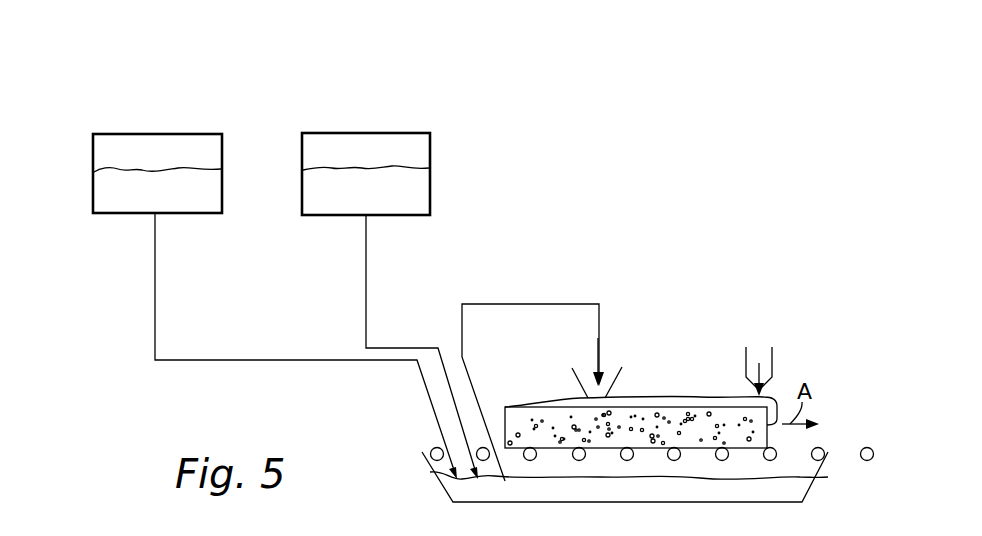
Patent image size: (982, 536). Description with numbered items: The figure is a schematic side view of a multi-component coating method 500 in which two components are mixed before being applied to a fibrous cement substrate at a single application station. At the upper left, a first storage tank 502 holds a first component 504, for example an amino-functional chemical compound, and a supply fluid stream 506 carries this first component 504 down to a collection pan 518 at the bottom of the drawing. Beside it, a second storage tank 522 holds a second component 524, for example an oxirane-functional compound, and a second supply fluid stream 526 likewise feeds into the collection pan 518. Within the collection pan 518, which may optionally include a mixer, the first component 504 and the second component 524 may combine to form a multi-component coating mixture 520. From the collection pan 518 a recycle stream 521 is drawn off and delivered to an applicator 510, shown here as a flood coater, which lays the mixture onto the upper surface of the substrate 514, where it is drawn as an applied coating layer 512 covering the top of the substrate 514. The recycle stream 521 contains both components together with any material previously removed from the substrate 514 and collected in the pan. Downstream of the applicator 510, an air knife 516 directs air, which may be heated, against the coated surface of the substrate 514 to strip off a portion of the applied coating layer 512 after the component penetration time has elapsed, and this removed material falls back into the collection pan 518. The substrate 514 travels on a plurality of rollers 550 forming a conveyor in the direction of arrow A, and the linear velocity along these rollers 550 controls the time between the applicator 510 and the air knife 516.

The multi-component coating method 500 is at (259, 90).
The first storage tank 502 is at (112, 134).
The first component 504 is at (107, 171).
The supply fluid stream 506 is at (191, 360).
The applicator 510 is at (620, 379).
The coating layer 512 is at (678, 397).
The substrate 514 is at (531, 407).
The air knife 516 is at (772, 360).
The collection pan 518 is at (815, 470).
The multi-component coating mixture 520 is at (448, 473).
The recycle stream 521 is at (518, 304).
The second storage tank 522 is at (417, 133).
The second component 524 is at (416, 171).
The supply fluid stream 526 is at (401, 348).
The rollers 550 is at (862, 447).